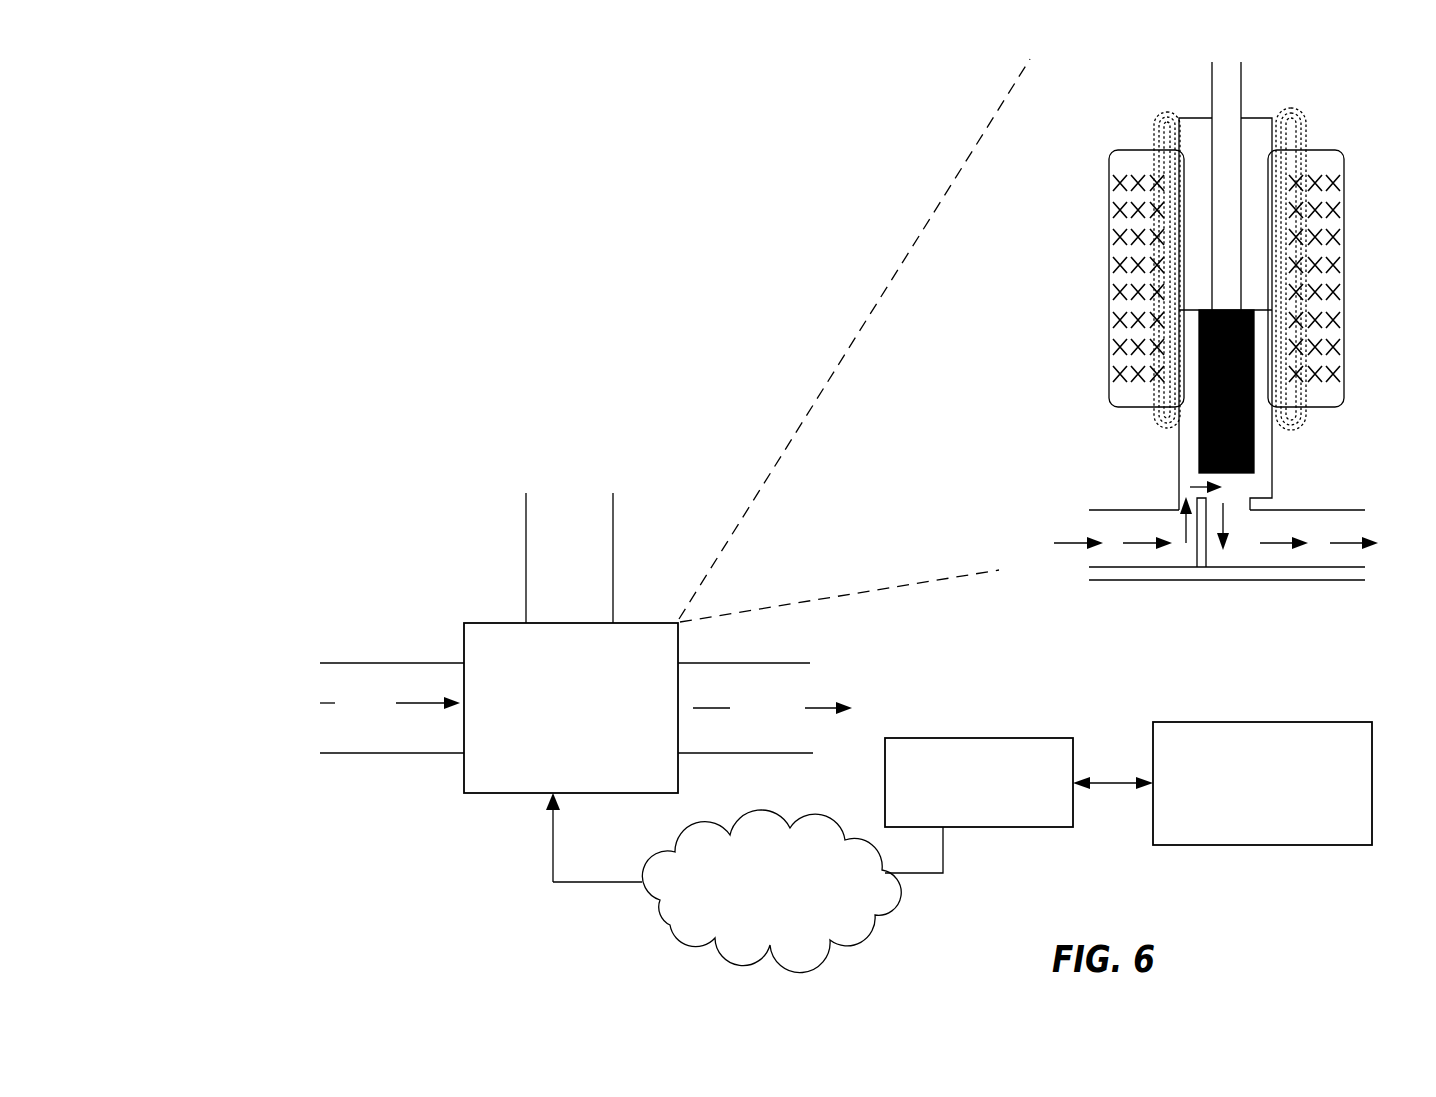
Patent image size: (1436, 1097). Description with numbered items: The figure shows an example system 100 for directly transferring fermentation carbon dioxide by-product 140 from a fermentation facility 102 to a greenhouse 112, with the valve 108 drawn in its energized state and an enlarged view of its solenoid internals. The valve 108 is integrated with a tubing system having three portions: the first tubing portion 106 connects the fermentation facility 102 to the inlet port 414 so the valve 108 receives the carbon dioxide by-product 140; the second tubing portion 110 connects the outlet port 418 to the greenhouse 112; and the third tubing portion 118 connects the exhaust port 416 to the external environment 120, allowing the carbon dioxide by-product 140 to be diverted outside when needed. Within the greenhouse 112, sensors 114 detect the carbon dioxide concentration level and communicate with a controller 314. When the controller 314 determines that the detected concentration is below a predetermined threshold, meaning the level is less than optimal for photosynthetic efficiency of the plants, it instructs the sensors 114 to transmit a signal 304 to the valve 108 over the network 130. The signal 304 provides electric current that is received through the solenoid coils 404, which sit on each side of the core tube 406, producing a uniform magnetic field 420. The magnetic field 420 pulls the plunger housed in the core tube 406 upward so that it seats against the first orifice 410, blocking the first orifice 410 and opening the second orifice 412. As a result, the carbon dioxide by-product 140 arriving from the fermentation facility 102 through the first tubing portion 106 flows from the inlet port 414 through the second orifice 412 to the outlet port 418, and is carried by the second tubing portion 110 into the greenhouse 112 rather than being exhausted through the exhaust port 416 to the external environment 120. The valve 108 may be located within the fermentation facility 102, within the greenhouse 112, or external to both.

The system 100 is at (303, 116).
The fermentation facility 102 is at (218, 686).
The first tubing portion 106 is at (382, 753).
The valve 108 is at (592, 703).
The second tubing portion 110 is at (777, 753).
The greenhouse 112 is at (997, 673).
The sensors 114 is at (1003, 778).
The third tubing portion 118 is at (526, 600).
The external environment 120 is at (587, 421).
The network 130 is at (795, 881).
The carbon dioxide by-product 140 is at (377, 690).
The signal 304 is at (492, 863).
The controller 314 is at (1287, 778).
The solenoid coils 404 is at (1118, 150).
The core tube 406 is at (1180, 118).
The first orifice 410 is at (1228, 302).
The second orifice 412 is at (1232, 498).
The inlet port 414 is at (1115, 510).
The exhaust port 416 is at (1243, 102).
The outlet port 418 is at (1345, 568).
The magnetic field 420 is at (1303, 133).